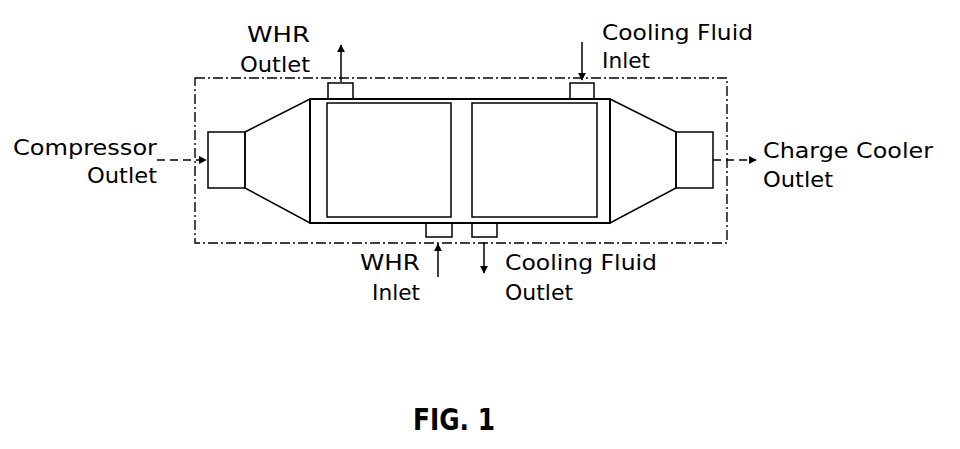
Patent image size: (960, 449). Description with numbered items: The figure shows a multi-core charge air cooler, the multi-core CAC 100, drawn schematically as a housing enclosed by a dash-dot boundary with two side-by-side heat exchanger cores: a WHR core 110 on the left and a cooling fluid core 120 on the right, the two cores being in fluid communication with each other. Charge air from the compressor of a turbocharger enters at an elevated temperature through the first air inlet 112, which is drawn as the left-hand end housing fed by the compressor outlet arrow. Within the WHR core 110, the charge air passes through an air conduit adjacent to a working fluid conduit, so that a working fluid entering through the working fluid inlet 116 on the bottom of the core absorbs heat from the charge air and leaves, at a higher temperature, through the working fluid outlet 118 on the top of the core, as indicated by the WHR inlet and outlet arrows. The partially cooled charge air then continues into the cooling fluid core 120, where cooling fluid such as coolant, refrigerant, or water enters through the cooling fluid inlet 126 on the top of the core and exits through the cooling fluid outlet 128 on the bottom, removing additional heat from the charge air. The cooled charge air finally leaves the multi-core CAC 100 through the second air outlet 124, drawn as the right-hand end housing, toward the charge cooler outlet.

The multi-core CAC 100 is at (190, 234).
The WHR core 110 is at (410, 171).
The first air inlet 112 is at (232, 143).
The working fluid inlet 116 is at (445, 232).
The working fluid outlet 118 is at (353, 90).
The cooling fluid core 120 is at (555, 171).
The second air outlet 124 is at (697, 143).
The cooling fluid inlet 126 is at (570, 92).
The cooling fluid outlet 128 is at (483, 232).